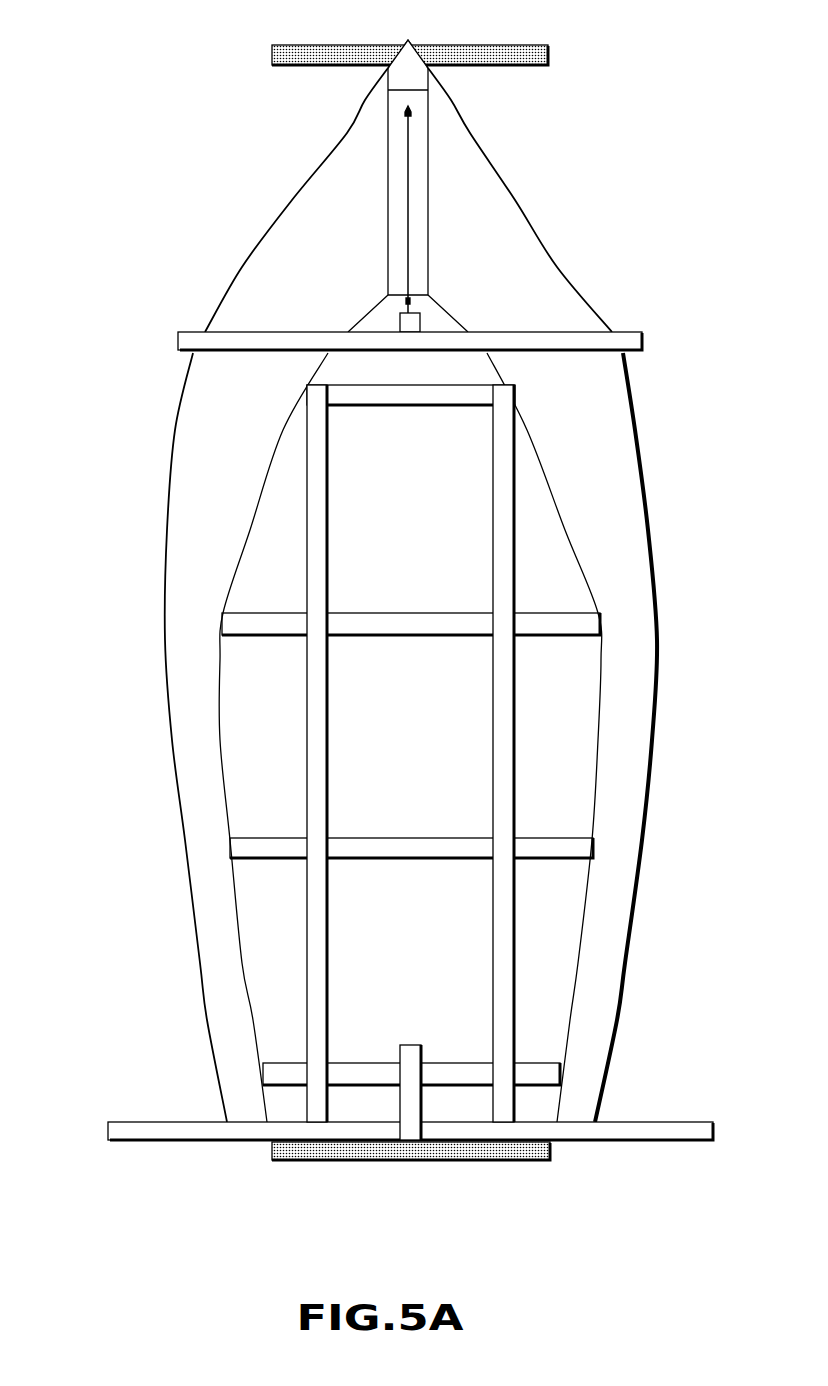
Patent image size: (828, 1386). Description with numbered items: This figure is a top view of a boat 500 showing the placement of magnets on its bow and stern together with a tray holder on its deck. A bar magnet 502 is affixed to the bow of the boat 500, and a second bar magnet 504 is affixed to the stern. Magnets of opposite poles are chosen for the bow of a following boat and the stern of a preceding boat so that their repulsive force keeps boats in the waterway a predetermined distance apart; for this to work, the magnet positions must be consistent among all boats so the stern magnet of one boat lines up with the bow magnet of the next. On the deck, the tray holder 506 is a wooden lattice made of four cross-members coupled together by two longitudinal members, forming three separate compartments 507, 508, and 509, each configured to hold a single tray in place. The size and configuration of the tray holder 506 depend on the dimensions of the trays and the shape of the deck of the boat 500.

The boat 500 is at (117, 33).
The bar magnet 502 is at (485, 46).
The second bar magnet 504 is at (518, 1162).
The tray holder 506 is at (595, 622).
The compartment 507 is at (347, 540).
The compartment 508 is at (347, 729).
The compartment 509 is at (347, 942).